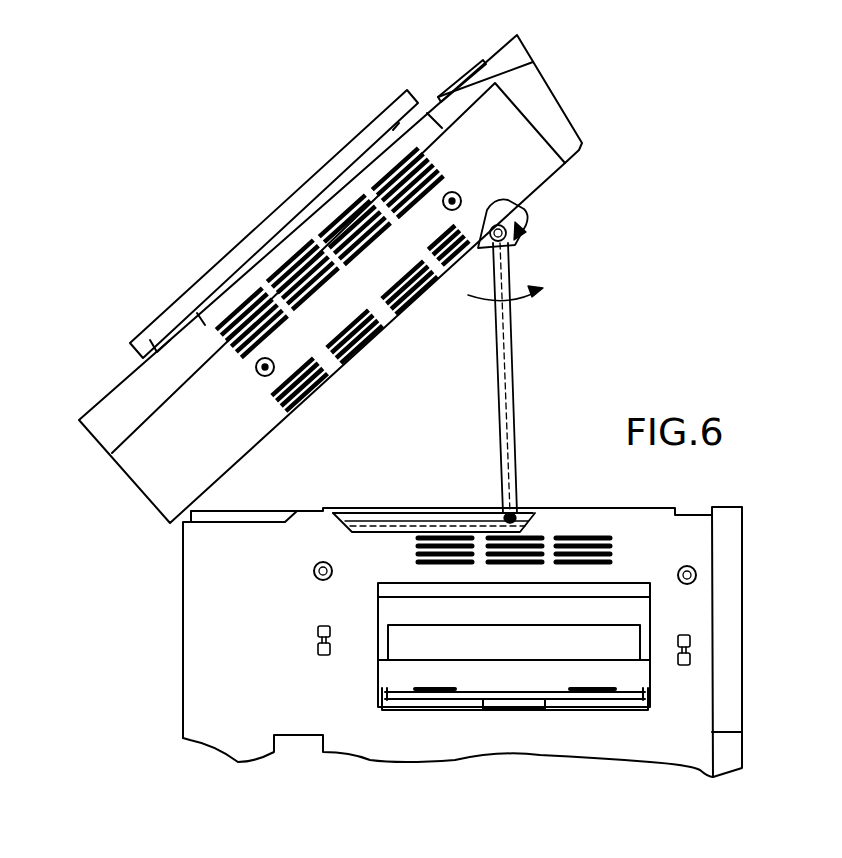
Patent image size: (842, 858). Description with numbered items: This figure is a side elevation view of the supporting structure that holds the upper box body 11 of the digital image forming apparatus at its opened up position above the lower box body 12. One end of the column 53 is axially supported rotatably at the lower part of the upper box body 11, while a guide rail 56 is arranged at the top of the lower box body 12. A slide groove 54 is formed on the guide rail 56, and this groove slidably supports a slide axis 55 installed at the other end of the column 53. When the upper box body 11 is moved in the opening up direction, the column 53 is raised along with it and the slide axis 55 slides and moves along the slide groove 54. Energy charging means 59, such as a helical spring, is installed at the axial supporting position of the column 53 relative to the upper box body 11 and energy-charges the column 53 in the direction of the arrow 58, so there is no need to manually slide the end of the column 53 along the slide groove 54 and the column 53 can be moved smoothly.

The upper box body 11 is at (550, 185).
The lower box body 12 is at (742, 612).
The column 53 is at (512, 374).
The slide groove 54 is at (393, 513).
The slide axis 55 is at (518, 514).
The guide rail 56 is at (435, 508).
The arrow 58 is at (528, 302).
The energy charging means 59 is at (517, 233).